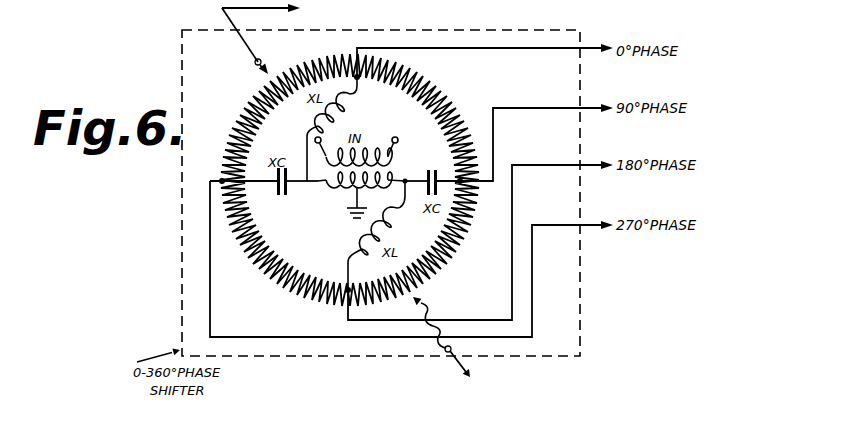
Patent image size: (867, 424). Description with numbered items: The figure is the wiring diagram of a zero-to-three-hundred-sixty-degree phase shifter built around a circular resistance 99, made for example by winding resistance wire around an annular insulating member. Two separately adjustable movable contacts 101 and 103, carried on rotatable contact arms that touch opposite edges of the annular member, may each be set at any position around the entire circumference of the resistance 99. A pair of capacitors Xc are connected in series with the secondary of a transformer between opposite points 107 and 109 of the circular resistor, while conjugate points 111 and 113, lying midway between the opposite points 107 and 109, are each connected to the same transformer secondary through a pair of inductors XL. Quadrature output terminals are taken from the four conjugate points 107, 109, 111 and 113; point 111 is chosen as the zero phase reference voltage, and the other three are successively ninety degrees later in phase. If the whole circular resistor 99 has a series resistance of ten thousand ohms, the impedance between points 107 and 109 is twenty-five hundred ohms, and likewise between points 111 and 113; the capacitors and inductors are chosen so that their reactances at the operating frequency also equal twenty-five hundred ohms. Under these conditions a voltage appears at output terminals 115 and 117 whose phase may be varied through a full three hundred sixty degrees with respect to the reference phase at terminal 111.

The circular resistance 99 is at (432, 92).
The movable contact 101 is at (264, 74).
The movable contact 103 is at (419, 302).
The opposite point 107 is at (459, 180).
The opposite point 109 is at (222, 181).
The conjugate point 111 is at (359, 79).
The conjugate point 113 is at (346, 287).
The output terminal 115 is at (260, 60).
The output terminal 117 is at (451, 349).